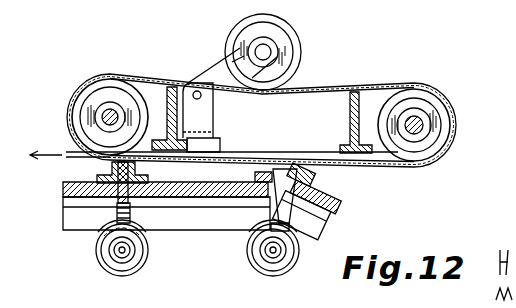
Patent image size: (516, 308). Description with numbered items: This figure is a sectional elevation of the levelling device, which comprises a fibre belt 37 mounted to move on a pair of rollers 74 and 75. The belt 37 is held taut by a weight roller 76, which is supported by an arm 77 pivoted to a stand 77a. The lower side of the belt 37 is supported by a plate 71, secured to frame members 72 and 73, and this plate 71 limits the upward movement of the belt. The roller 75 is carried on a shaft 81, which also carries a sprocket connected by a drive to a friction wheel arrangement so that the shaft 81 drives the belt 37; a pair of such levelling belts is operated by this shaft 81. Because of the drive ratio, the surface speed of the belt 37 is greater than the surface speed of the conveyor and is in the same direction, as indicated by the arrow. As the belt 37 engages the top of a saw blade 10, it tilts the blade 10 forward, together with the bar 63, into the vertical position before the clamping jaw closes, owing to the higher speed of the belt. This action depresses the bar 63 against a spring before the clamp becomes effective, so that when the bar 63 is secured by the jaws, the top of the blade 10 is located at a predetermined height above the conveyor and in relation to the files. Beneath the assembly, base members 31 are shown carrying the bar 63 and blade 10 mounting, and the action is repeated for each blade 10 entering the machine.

The blade 10 is at (116, 167).
The base 31 is at (216, 184).
The fibre belt 37 is at (385, 167).
The bar 63 is at (95, 234).
The plate 71 is at (276, 150).
The frame member 72 is at (350, 98).
The frame member 73 is at (168, 100).
The roller 74 is at (440, 116).
The roller 75 is at (90, 101).
The weight roller 76 is at (292, 40).
The arm 77 is at (218, 63).
The stand 77a is at (214, 112).
The shaft 81 is at (103, 118).